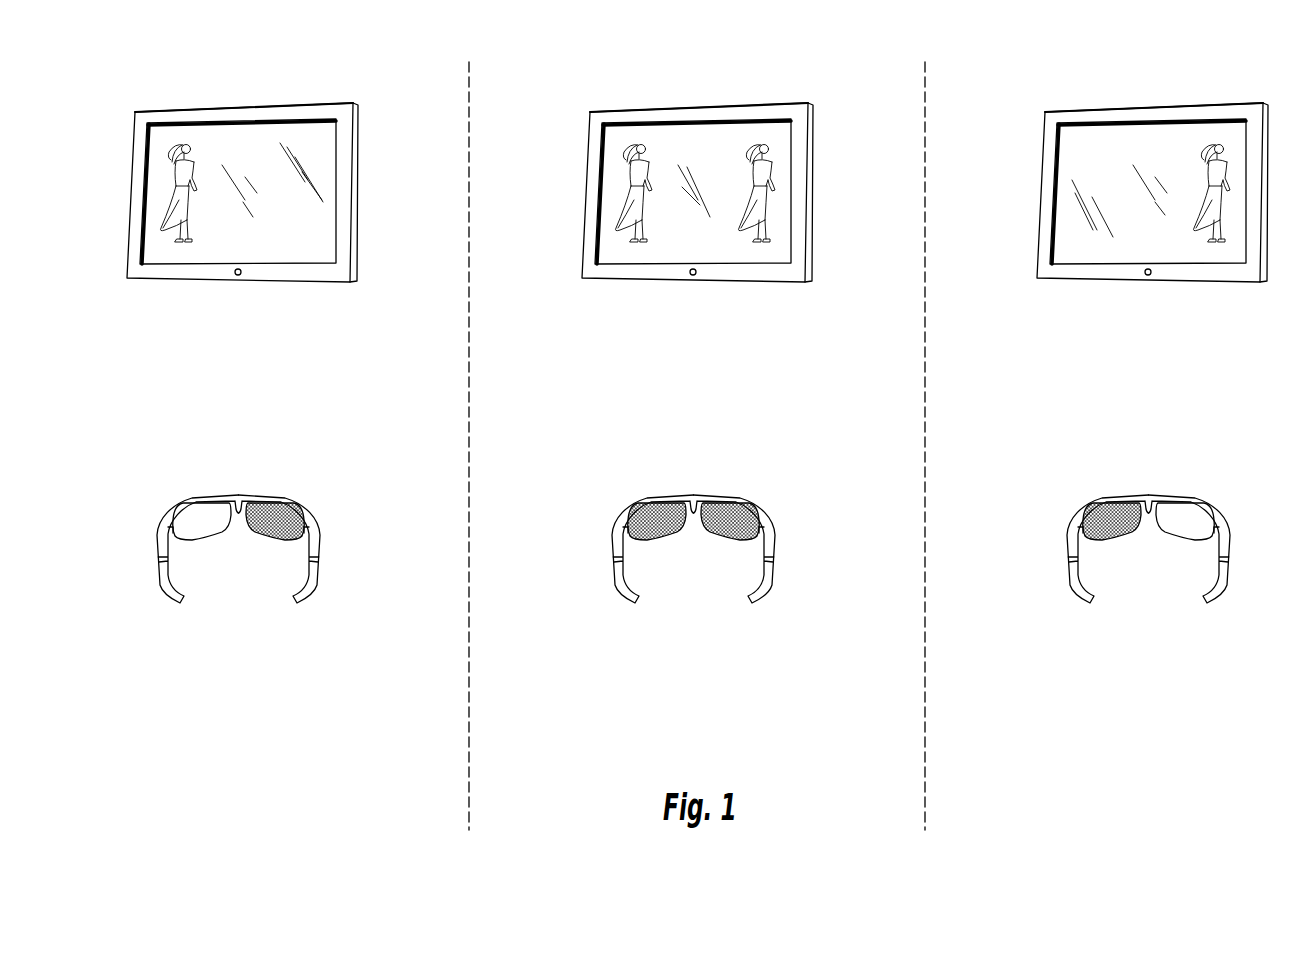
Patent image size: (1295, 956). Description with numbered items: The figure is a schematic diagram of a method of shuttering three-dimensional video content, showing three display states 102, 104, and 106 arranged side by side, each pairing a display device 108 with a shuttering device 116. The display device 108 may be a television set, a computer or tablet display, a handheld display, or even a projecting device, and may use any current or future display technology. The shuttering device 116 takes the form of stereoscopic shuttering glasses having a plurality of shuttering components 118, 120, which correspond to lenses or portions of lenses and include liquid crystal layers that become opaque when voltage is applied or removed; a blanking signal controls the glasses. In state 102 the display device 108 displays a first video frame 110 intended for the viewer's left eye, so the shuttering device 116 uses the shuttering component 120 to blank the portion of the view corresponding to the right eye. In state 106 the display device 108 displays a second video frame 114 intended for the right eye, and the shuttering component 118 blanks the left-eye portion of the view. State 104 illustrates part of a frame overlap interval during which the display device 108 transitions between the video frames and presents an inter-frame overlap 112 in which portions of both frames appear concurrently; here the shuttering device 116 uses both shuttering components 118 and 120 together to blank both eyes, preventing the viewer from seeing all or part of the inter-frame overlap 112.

The display state 102 is at (253, 59).
The display state 104 is at (708, 59).
The display state 106 is at (1163, 59).
The display device 108 is at (303, 283).
The first video frame 110 is at (253, 157).
The inter-frame overlap 112 is at (693, 191).
The second video frame 114 is at (1148, 191).
The shuttering device 116 is at (313, 558).
The shuttering component 118 is at (203, 512).
The shuttering component 120 is at (277, 508).